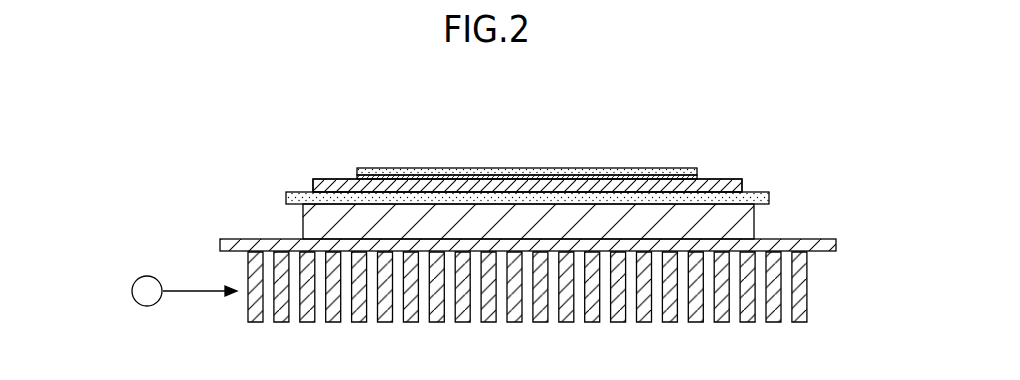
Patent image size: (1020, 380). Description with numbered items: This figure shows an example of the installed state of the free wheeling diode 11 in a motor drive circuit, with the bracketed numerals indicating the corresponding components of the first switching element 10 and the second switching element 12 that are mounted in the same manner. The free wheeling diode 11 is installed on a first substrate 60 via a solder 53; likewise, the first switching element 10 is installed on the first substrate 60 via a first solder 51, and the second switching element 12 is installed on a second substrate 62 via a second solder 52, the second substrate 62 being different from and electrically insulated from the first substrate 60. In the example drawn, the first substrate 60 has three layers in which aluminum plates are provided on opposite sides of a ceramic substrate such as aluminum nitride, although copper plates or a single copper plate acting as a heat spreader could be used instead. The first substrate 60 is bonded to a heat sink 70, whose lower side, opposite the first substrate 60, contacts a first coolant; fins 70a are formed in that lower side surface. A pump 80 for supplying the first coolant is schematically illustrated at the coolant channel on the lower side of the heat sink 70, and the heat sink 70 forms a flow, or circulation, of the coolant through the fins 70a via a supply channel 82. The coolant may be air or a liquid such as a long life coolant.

The free wheeling diode 11 is at (527, 149).
The first switching element 10 is at (527, 171).
The second switching element 12 is at (458, 168).
The solder 53 is at (525, 155).
The first solder 51 is at (527, 185).
The second solder 52 is at (356, 178).
The first substrate 60 is at (575, 209).
The second substrate 62 is at (528, 221).
The heat sink 70 is at (221, 241).
The fins 70a is at (247, 312).
The pump 80 is at (147, 276).
The supply channel 82 is at (163, 294).